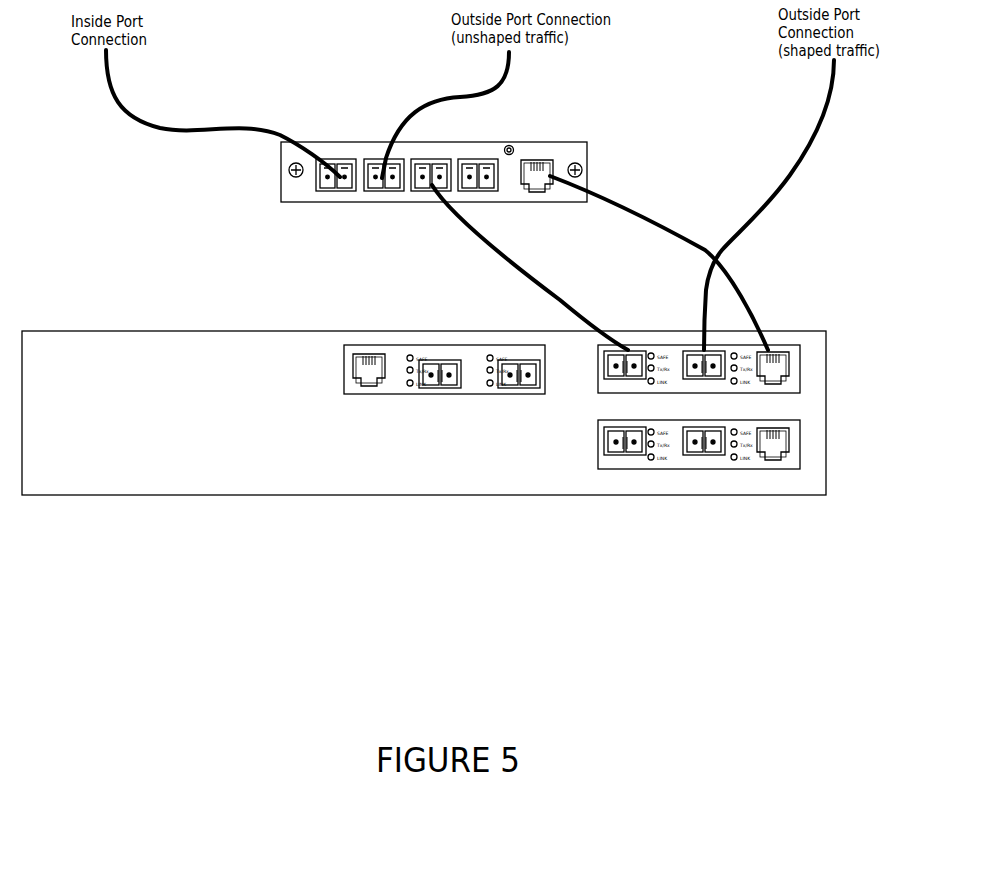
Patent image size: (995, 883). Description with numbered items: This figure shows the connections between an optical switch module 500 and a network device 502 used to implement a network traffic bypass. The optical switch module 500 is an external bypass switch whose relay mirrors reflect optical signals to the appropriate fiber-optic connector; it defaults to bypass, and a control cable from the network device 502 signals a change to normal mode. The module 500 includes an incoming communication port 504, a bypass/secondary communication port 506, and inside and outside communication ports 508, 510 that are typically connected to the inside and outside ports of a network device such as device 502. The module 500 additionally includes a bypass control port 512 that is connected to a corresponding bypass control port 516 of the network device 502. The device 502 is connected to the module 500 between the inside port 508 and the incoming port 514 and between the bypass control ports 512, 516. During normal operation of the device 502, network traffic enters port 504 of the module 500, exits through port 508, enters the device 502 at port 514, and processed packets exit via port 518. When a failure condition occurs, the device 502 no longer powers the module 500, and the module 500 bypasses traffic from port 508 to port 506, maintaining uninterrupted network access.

The optical switch module 500 is at (268, 194).
The network device 502 is at (166, 440).
The incoming communication port 504 is at (325, 198).
The bypass/secondary communication port 506 is at (378, 203).
The inside communication port 508 is at (432, 198).
The outside communication port 510 is at (486, 198).
The bypass control port 512 is at (560, 147).
The incoming port of network device 514 is at (634, 340).
The bypass control port of network device 516 is at (790, 338).
The outgoing port of network device 518 is at (693, 340).